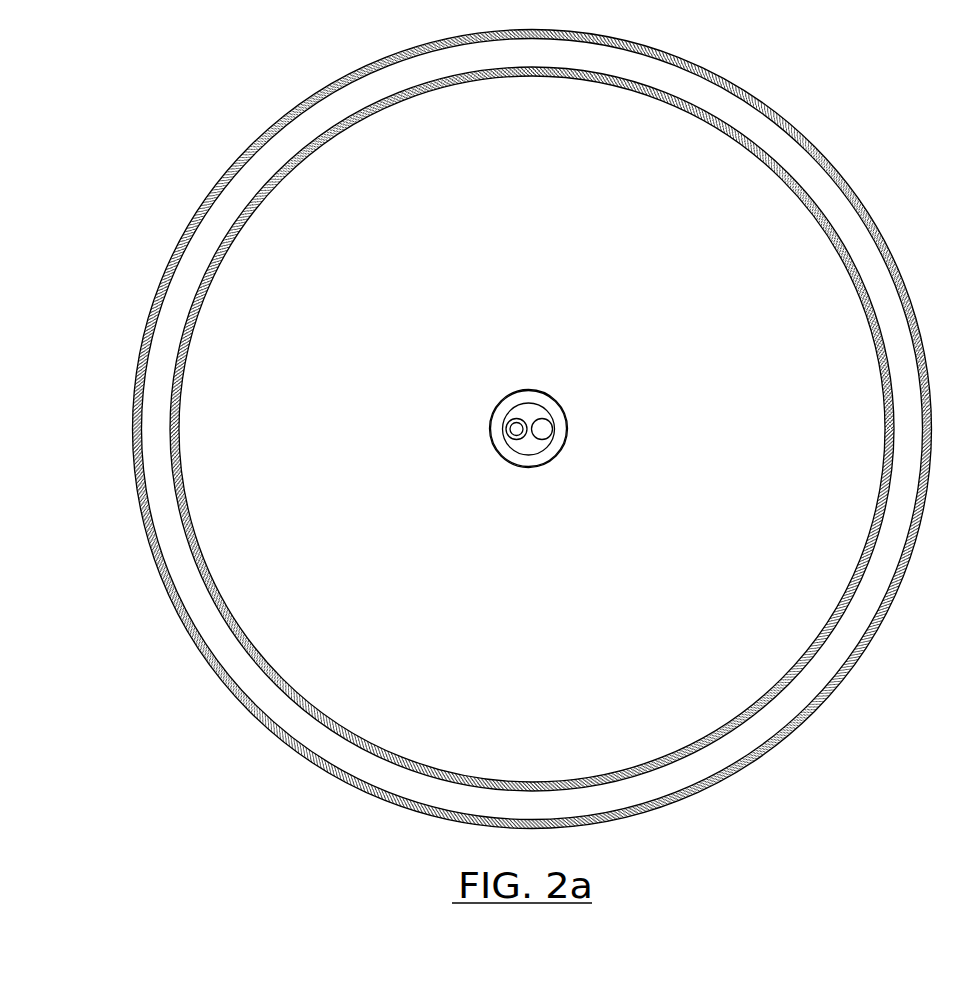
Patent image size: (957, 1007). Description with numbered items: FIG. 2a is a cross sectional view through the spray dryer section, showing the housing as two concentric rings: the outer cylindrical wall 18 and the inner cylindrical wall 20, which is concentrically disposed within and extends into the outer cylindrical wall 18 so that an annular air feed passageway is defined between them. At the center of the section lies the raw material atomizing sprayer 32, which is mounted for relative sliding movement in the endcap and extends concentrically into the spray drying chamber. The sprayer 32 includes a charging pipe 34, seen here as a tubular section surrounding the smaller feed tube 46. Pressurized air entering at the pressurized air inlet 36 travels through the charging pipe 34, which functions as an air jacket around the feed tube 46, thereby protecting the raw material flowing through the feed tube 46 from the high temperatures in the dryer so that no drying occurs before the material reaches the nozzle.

The outer cylindrical wall 18 is at (763, 103).
The inner cylindrical wall 20 is at (884, 503).
The raw material atomizing sprayer 32 is at (532, 372).
The charging pipe 34 is at (528, 468).
The pressurized air inlet 36 is at (554, 430).
The feed tube 46 is at (503, 430).